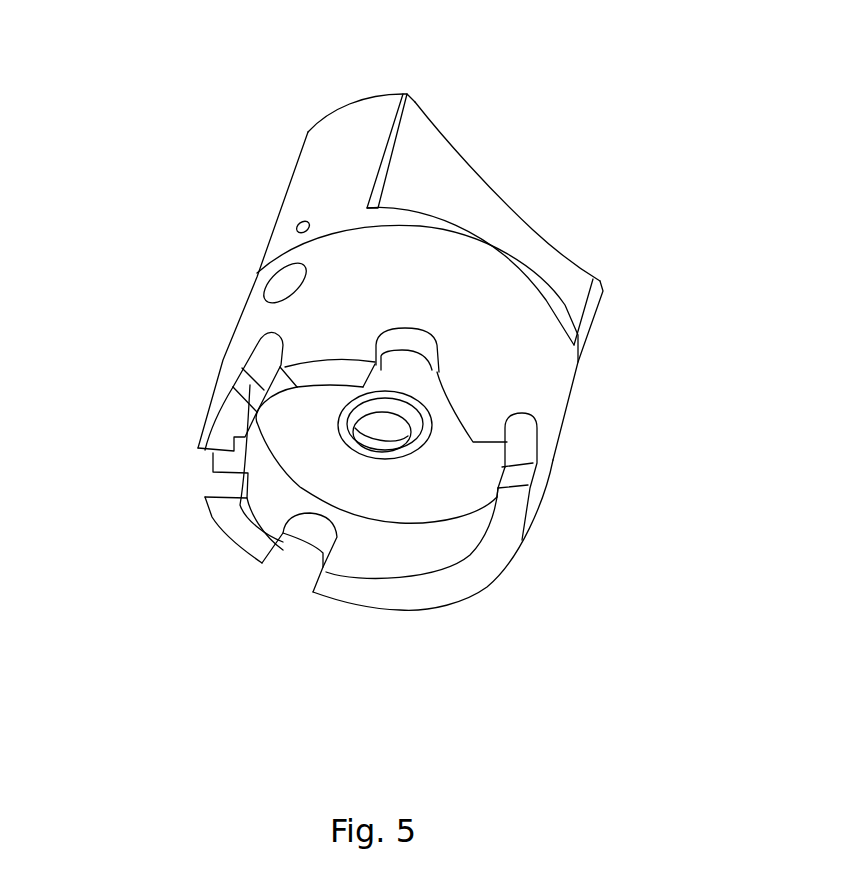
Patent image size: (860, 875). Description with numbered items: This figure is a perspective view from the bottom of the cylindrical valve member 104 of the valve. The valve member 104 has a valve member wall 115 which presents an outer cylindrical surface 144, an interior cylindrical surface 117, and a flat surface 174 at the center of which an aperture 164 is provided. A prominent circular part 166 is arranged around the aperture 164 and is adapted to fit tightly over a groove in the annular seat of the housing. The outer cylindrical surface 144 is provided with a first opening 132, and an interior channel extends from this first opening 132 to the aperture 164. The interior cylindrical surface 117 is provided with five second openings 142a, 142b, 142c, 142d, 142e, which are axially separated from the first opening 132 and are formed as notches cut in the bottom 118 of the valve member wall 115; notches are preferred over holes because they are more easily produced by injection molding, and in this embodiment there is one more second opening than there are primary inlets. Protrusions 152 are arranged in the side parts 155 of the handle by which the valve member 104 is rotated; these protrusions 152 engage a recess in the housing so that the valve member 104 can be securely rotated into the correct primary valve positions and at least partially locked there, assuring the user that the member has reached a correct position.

The valve member 104 is at (588, 115).
The valve member wall 115 is at (513, 536).
The interior cylindrical surface 117 is at (423, 552).
The bottom of the valve member wall 118 is at (388, 597).
The first opening 132 is at (282, 285).
The second opening 142a is at (265, 353).
The second opening 142b is at (232, 466).
The second opening 142c is at (296, 548).
The second opening 142d is at (527, 450).
The second opening 142e is at (405, 360).
The outer cylindrical surface 144 is at (512, 388).
The protrusions 152 is at (297, 228).
The side parts of the handle 155 is at (330, 155).
The aperture 164 is at (392, 437).
The prominent circular part 166 is at (405, 460).
The flat surface 174 is at (300, 452).